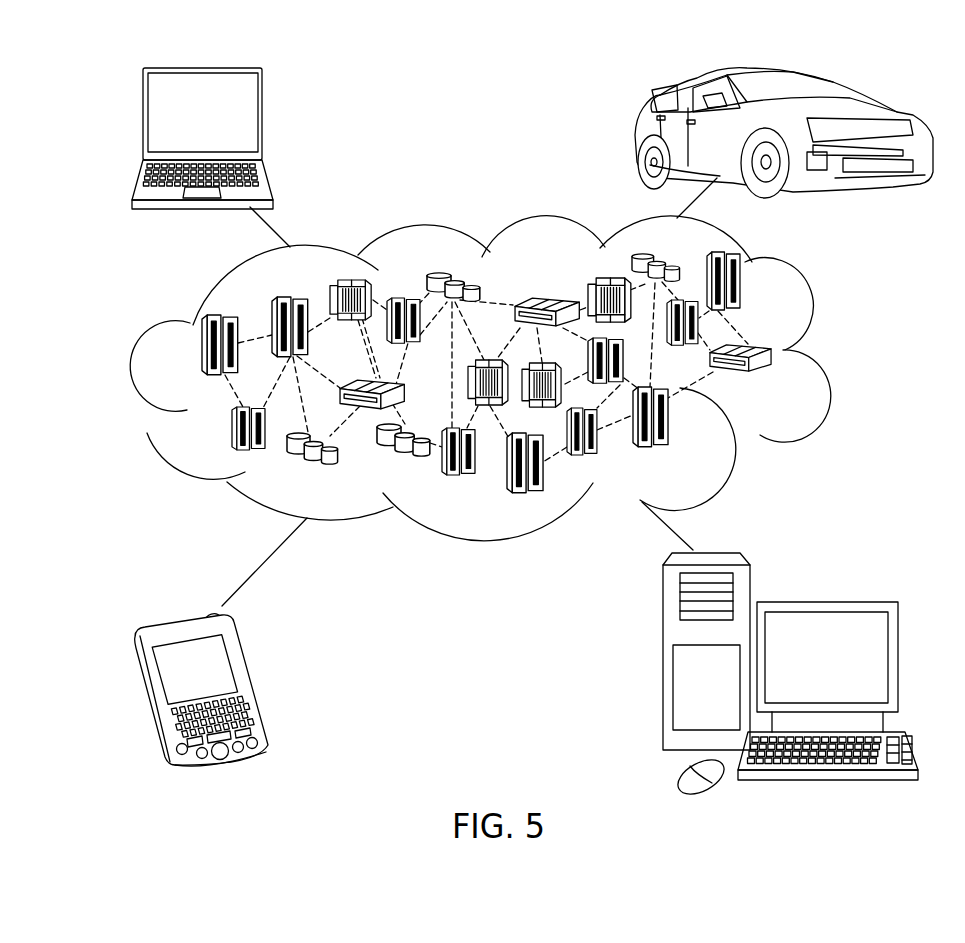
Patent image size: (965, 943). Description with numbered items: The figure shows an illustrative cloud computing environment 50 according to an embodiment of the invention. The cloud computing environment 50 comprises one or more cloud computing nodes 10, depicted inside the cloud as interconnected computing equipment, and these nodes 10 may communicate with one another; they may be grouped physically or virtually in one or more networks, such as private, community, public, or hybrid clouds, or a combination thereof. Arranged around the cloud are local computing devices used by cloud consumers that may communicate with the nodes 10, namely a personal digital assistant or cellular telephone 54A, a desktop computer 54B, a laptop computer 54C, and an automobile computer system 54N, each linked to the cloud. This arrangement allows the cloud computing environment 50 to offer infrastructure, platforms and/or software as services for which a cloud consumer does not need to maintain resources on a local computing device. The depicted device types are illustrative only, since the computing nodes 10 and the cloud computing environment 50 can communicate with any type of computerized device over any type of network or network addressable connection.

The cloud computing node 10 is at (785, 382).
The cloud computing environment 50 is at (825, 353).
The personal digital assistant or cellular telephone 54A is at (253, 680).
The desktop computer 54B is at (825, 600).
The laptop computer 54C is at (262, 120).
The automobile computer system 54N is at (637, 133).